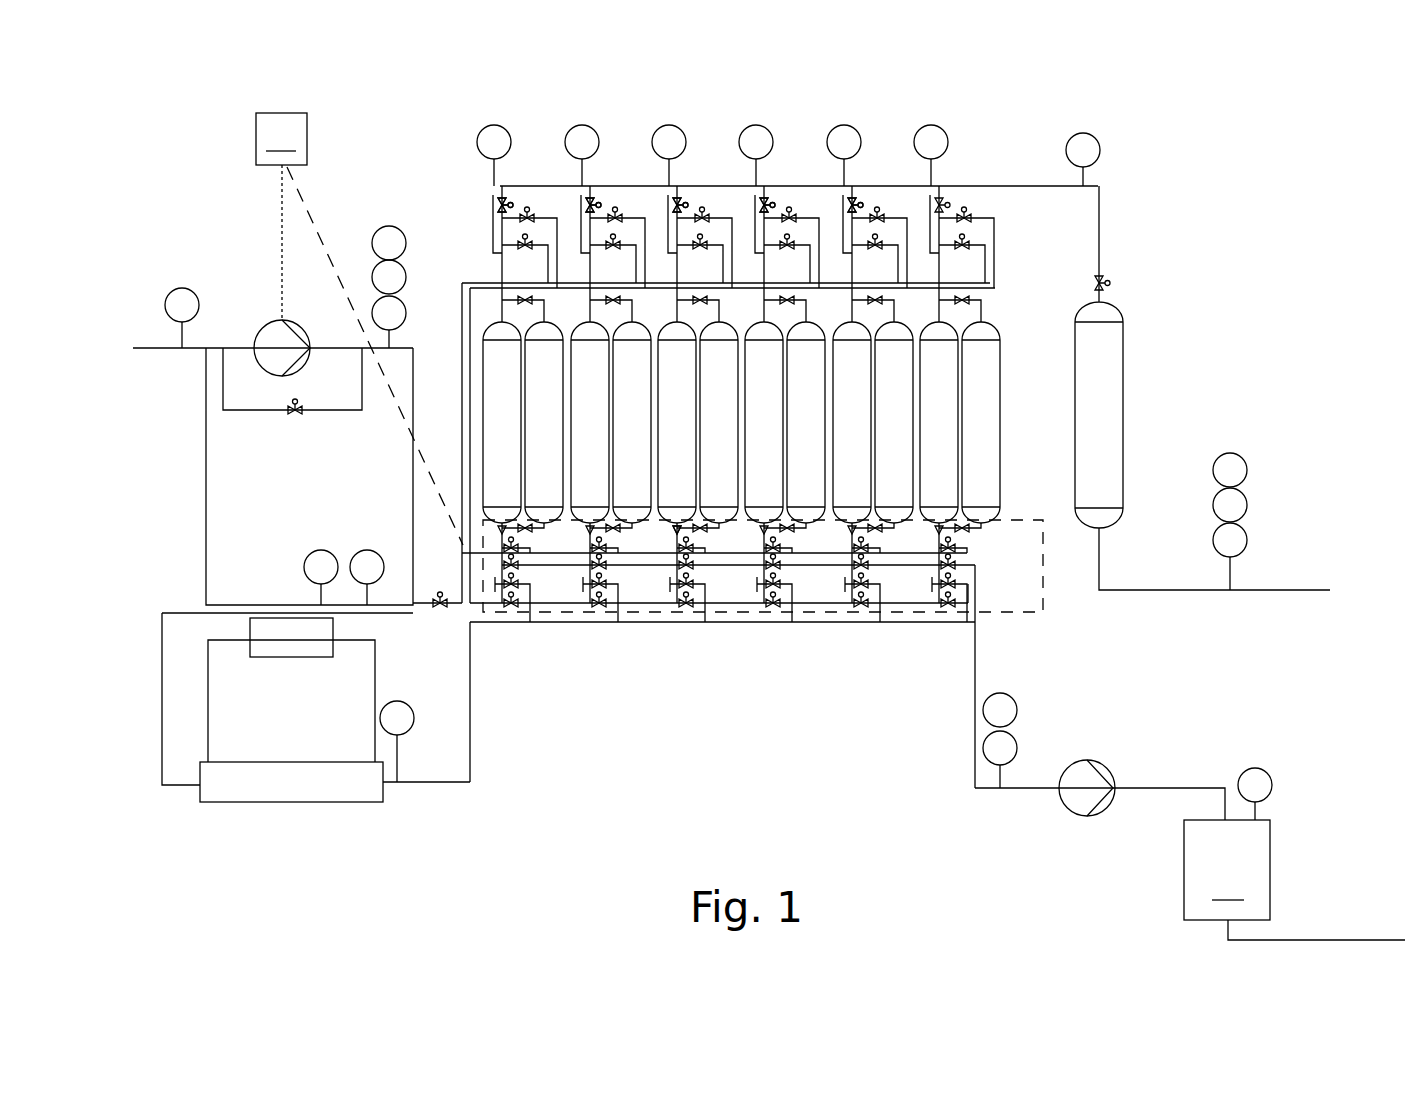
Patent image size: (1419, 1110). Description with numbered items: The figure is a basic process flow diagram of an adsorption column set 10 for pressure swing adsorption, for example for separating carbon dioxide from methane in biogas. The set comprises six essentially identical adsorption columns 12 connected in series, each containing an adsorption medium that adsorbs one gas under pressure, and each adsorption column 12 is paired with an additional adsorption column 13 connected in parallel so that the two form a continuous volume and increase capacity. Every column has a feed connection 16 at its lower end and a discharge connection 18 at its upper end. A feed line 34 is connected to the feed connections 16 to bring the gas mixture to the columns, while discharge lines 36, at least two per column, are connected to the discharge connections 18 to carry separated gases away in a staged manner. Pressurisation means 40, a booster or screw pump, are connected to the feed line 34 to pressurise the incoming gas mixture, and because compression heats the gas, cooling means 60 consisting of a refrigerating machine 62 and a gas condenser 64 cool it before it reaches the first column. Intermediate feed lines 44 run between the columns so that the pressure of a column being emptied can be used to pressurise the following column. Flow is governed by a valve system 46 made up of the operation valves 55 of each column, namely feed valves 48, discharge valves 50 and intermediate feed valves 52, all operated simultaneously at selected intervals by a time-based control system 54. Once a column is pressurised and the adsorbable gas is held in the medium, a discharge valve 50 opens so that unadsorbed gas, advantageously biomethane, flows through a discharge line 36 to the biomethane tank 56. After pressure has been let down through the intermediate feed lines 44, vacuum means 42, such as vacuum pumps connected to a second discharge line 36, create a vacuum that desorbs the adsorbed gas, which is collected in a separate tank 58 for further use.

The adsorption column set 10 is at (1268, 232).
The adsorption column 12 is at (720, 422).
The additional adsorption column 13 is at (762, 422).
The feed connection 16 is at (535, 538).
The discharge connection 18 is at (510, 254).
The feed line 34 is at (706, 592).
The discharge line 36 is at (503, 215).
The pressurisation means 40 is at (272, 362).
The vacuum means 42 is at (1136, 770).
The intermediate feed line 44 is at (825, 617).
The valve system 46 is at (990, 552).
The feed valve 48 is at (771, 542).
The discharge valve 50 is at (765, 208).
The intermediate feed valve 52 is at (692, 540).
The control system 54 is at (359, 329).
The operation valves 55 is at (757, 635).
The biomethane tank 56 is at (1125, 437).
The tank 58 is at (1294, 854).
The cooling means 60 is at (360, 847).
The refrigerating machine 62 is at (293, 650).
The gas condenser 64 is at (296, 805).